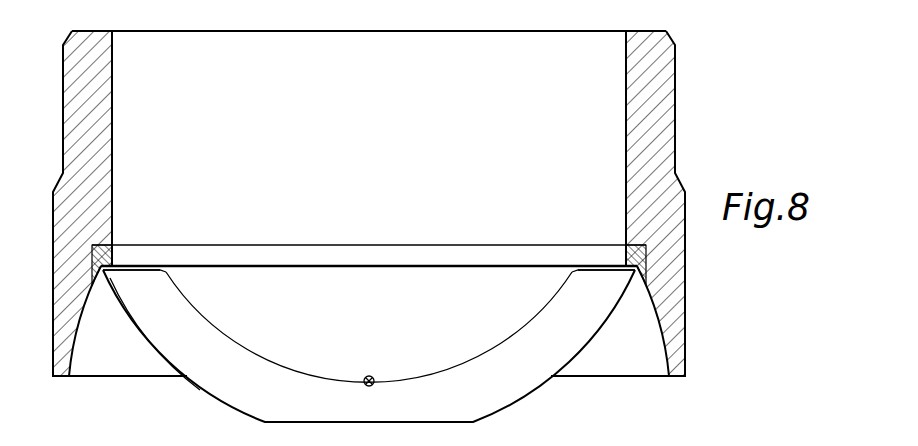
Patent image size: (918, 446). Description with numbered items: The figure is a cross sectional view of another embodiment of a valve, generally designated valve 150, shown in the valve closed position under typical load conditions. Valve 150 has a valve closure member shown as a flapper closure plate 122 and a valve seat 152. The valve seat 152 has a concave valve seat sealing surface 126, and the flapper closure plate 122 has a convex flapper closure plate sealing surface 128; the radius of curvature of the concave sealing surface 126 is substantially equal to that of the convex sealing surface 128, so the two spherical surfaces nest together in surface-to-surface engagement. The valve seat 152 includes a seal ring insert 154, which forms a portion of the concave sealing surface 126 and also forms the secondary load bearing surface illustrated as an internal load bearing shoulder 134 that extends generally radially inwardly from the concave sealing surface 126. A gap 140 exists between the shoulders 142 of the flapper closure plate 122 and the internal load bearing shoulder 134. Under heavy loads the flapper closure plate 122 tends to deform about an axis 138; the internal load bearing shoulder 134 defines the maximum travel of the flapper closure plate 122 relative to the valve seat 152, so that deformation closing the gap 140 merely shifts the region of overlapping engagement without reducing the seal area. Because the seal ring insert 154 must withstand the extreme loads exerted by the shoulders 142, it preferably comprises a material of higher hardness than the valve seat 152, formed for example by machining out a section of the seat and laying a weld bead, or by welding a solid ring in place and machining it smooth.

The valve 150 is at (697, 76).
The valve seat 152 is at (667, 124).
The seal ring insert 154 is at (92, 245).
The internal load bearing shoulder 134 is at (126, 266).
The shoulders 142 is at (122, 280).
The gap 140 is at (613, 202).
The axis 138 is at (370, 375).
The flapper closure plate 122 is at (510, 388).
The concave valve seat sealing surface 126 is at (628, 272).
The convex flapper closure plate sealing surface 128 is at (661, 336).